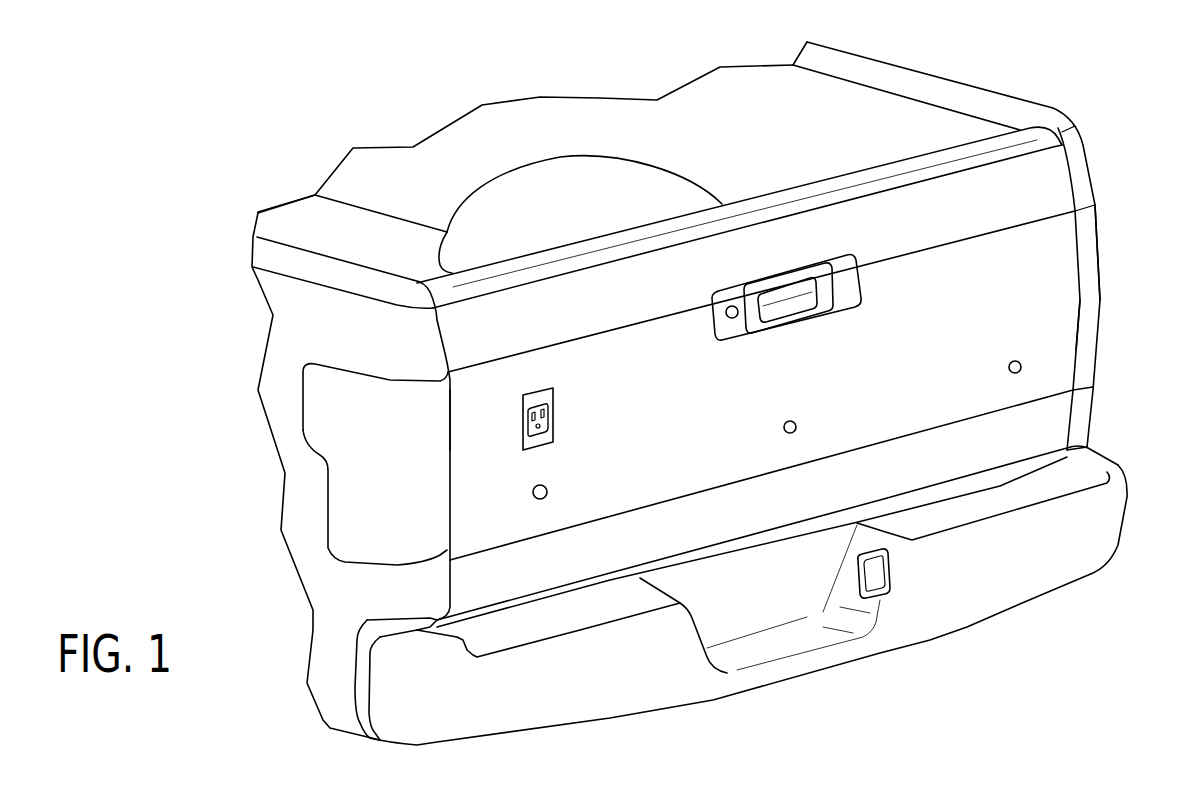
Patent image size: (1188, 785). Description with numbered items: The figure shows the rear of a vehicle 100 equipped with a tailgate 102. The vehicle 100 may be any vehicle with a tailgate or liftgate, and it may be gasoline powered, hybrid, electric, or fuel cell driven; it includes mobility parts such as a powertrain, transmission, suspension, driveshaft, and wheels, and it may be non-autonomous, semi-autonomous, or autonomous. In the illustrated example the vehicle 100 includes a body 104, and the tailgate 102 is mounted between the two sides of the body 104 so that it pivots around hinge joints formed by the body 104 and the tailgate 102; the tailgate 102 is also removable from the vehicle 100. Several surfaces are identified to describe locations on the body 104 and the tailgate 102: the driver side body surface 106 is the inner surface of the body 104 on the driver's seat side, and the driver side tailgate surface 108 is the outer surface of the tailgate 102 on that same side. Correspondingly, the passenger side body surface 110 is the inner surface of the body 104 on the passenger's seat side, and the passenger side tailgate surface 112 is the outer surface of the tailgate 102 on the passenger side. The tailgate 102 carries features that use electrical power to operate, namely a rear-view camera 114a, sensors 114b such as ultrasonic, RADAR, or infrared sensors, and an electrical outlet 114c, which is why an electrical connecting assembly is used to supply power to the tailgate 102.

The vehicle 100 is at (247, 130).
The tailgate 102 is at (1062, 323).
The body 104 is at (293, 337).
The driver side body surface 106 is at (456, 422).
The driver side tailgate surface 108 is at (447, 470).
The passenger side body surface 110 is at (1085, 236).
The passenger side tailgate surface 112 is at (1076, 273).
The rear-view camera 114a is at (730, 306).
The sensors 114b is at (548, 489).
The electrical outlet 114c is at (555, 415).